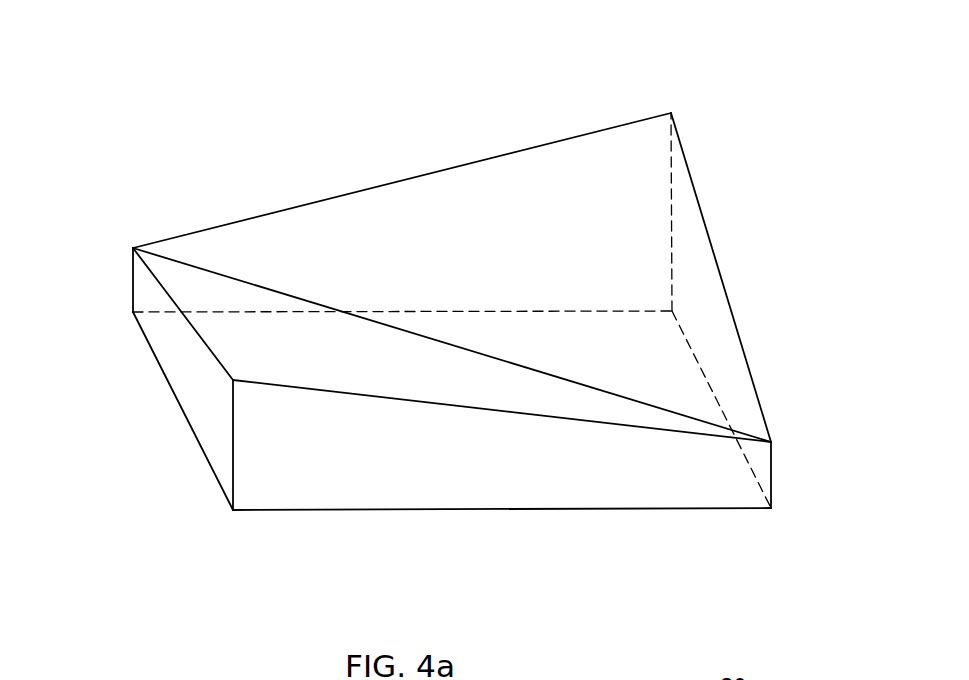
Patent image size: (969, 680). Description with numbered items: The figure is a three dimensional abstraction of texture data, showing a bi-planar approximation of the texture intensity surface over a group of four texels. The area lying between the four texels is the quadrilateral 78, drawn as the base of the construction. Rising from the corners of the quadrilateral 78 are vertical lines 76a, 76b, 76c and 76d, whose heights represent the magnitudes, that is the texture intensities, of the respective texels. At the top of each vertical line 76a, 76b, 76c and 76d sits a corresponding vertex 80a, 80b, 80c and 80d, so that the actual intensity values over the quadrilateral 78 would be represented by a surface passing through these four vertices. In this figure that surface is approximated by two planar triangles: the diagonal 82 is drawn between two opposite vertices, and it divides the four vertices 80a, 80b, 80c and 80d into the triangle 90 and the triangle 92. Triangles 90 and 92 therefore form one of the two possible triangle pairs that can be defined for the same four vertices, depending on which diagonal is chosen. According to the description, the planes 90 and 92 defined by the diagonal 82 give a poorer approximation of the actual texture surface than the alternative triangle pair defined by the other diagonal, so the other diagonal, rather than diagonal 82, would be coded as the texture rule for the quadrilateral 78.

The triangle 90 is at (402, 213).
The diagonal 82 is at (440, 338).
The triangle 92 is at (367, 362).
The quadrilateral 78 is at (637, 476).
The vertex 80a is at (233, 380).
The vertex 80b is at (133, 248).
The vertex 80c is at (671, 113).
The vertex 80d is at (771, 442).
The vertical line 76a is at (233, 447).
The vertical line 76b is at (133, 282).
The vertical line 76c is at (672, 250).
The vertical line 76d is at (771, 500).